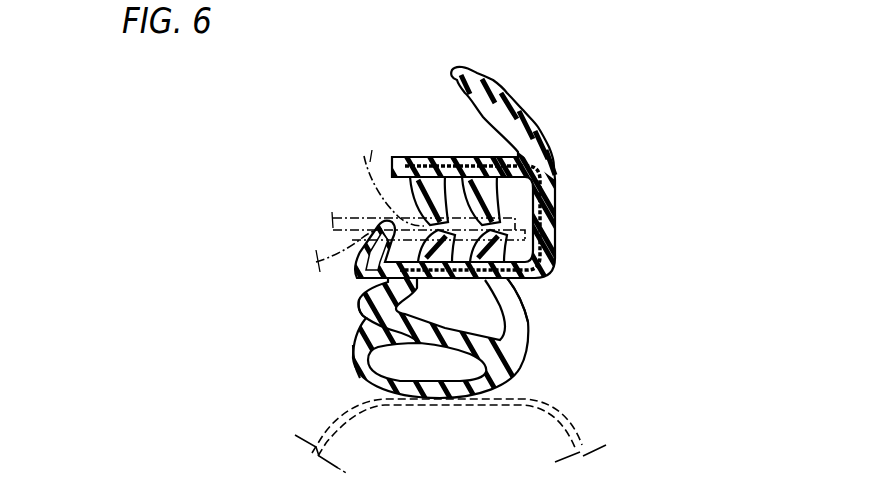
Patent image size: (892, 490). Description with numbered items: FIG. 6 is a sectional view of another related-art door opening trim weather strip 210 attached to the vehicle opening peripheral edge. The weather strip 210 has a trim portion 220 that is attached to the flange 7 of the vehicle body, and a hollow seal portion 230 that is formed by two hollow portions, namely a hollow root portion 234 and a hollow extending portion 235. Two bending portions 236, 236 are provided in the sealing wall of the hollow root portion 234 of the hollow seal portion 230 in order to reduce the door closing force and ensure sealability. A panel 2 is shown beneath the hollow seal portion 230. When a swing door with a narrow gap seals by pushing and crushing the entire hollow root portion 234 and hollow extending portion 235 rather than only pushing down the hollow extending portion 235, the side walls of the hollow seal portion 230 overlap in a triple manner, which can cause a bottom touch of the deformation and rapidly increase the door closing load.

The opening trim weather strip 210 is at (455, 225).
The trim portion 220 is at (559, 167).
The flange 7 is at (488, 220).
The hollow seal portion 230 is at (430, 350).
The hollow root portion 234 is at (526, 299).
The hollow extending portion 235 is at (357, 362).
The bending portion 236 is at (358, 304).
The door panel 2 is at (330, 425).